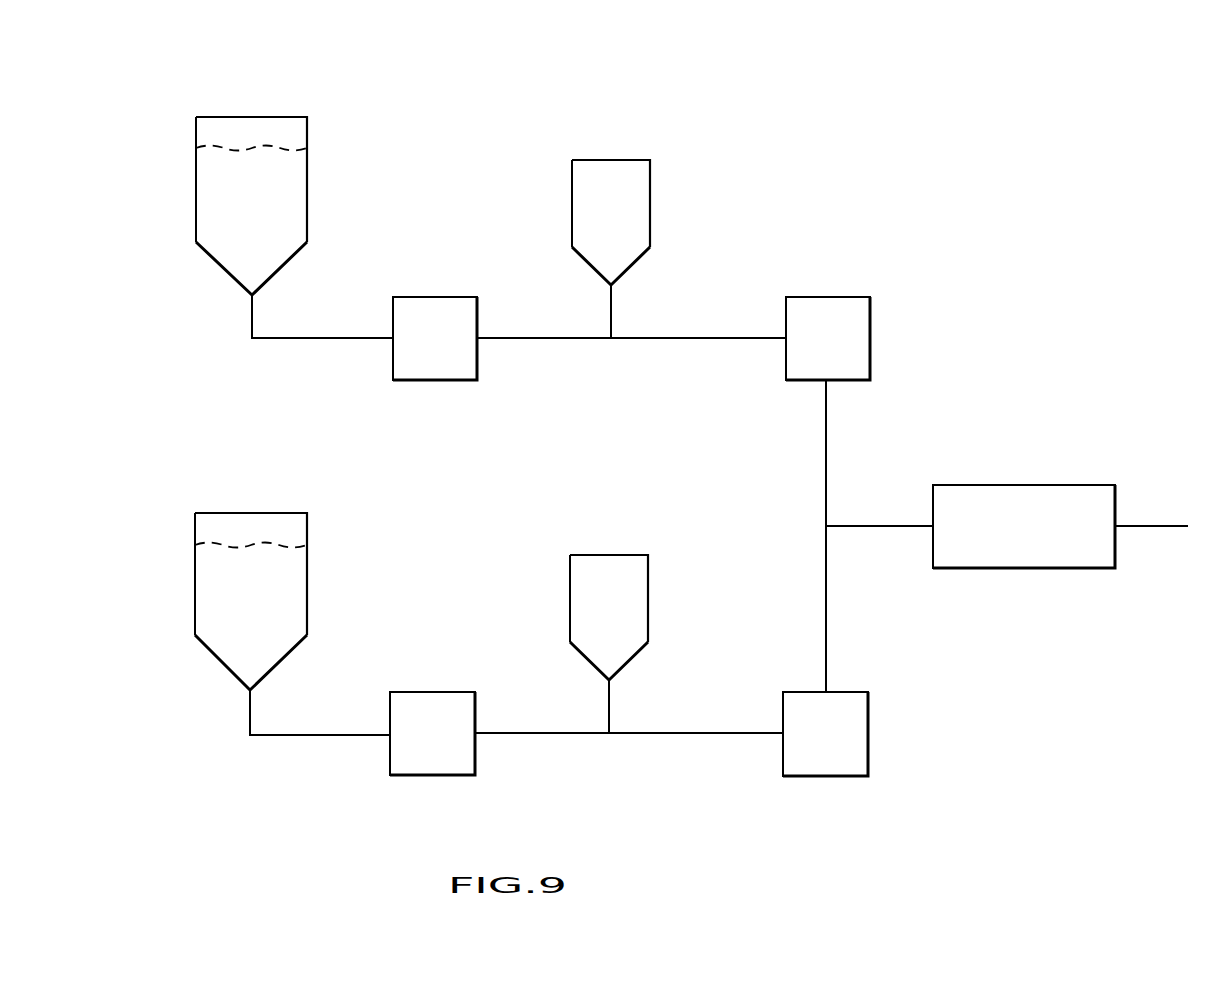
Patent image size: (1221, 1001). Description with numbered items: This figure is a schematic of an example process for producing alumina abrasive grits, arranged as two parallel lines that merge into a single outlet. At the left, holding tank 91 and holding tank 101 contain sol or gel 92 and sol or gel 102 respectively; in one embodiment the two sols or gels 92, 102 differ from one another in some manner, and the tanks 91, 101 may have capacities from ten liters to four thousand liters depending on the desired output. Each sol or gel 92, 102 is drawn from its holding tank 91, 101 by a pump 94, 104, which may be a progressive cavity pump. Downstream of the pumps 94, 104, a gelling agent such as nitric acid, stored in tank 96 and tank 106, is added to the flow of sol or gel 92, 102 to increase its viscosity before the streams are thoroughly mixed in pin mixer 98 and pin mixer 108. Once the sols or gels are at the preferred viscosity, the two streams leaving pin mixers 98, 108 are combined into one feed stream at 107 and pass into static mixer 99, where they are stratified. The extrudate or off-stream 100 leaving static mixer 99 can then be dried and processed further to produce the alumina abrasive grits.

The holding tank 91 is at (290, 115).
The sol or gel 92 is at (213, 178).
The pump 94 is at (445, 296).
The tank 96 is at (650, 190).
The pin mixer 98 is at (870, 310).
The static mixer 99 is at (993, 485).
The extrudate or off-stream 100 is at (1145, 526).
The holding tank 101 is at (290, 512).
The sol or gel 102 is at (207, 583).
The pump 104 is at (403, 692).
The tank 106 is at (648, 592).
The combining point 107 is at (826, 526).
The pin mixer 108 is at (868, 713).